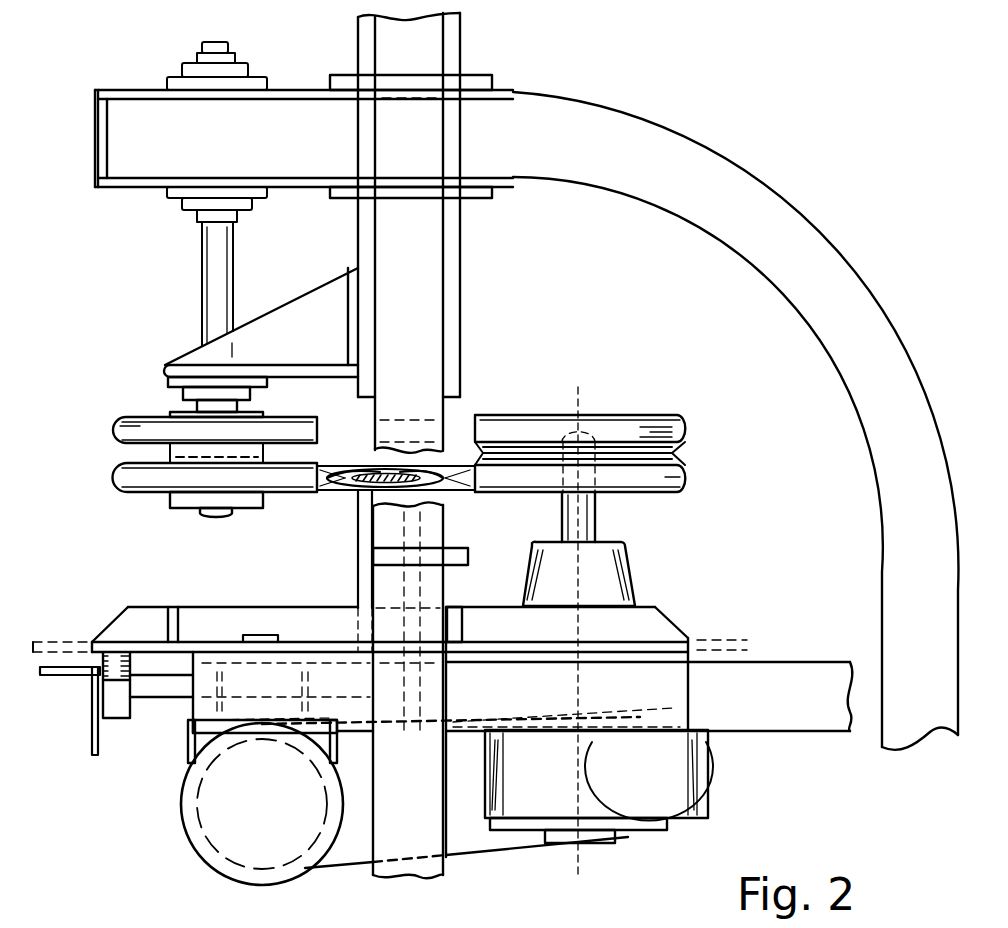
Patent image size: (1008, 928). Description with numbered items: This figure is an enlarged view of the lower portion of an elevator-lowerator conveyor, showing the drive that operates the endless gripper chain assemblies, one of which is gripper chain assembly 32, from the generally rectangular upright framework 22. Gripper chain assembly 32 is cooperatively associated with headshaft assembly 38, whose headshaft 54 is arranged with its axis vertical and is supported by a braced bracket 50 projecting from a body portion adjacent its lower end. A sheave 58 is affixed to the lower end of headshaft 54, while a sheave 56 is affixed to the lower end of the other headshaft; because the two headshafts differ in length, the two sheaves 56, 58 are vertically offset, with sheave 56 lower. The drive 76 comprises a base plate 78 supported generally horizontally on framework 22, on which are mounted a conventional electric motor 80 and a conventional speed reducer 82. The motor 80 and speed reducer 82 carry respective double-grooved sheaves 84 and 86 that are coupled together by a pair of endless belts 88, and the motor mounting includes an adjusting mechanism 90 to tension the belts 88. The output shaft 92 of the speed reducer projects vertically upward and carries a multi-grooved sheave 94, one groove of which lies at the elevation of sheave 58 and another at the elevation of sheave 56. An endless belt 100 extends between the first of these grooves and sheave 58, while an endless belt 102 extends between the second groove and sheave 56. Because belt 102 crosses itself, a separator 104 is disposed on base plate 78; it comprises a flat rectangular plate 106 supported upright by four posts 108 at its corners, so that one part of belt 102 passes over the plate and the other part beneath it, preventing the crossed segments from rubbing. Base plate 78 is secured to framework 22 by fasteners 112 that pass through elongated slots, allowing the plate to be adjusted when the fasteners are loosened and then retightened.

The upright framework 22 is at (463, 27).
The gripper chain assembly 32 is at (148, 162).
The headshaft assembly 38 is at (233, 250).
The braced bracket 50 is at (267, 333).
The headshaft 54 is at (217, 290).
The sheave 56 is at (118, 492).
The sheave 58 is at (120, 400).
The drive 76 is at (685, 630).
The base plate 78 is at (655, 606).
The electric motor 80 is at (192, 840).
The speed reducer 82 is at (520, 833).
The double-grooved sheave 84 is at (197, 793).
The double-grooved sheave 86 is at (673, 825).
The endless belts 88 is at (317, 865).
The adjusting mechanism 90 is at (73, 683).
The output shaft 92 is at (597, 520).
The multi-grooved sheave 94 is at (678, 415).
The endless belt 100 is at (607, 432).
The endless belt 102 is at (680, 469).
The separator 104 is at (357, 505).
The flat rectangular plate 106 is at (413, 477).
The posts 108 is at (365, 557).
The fasteners 112 is at (262, 633).